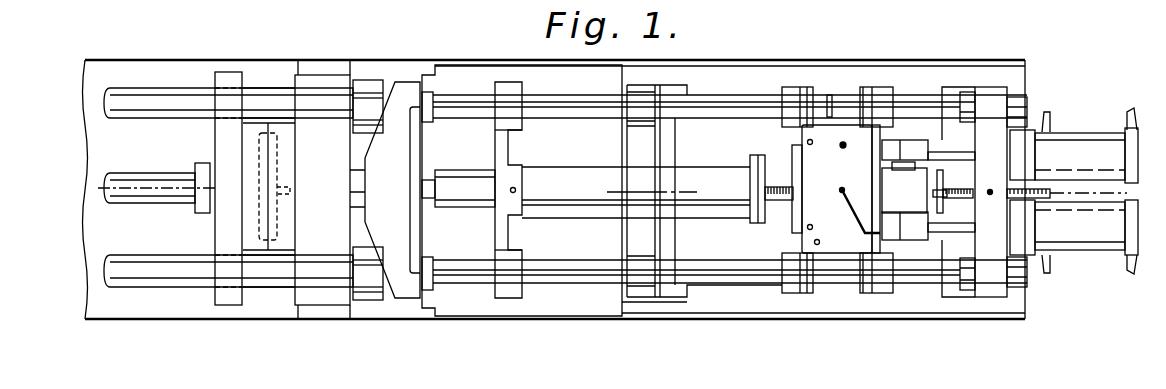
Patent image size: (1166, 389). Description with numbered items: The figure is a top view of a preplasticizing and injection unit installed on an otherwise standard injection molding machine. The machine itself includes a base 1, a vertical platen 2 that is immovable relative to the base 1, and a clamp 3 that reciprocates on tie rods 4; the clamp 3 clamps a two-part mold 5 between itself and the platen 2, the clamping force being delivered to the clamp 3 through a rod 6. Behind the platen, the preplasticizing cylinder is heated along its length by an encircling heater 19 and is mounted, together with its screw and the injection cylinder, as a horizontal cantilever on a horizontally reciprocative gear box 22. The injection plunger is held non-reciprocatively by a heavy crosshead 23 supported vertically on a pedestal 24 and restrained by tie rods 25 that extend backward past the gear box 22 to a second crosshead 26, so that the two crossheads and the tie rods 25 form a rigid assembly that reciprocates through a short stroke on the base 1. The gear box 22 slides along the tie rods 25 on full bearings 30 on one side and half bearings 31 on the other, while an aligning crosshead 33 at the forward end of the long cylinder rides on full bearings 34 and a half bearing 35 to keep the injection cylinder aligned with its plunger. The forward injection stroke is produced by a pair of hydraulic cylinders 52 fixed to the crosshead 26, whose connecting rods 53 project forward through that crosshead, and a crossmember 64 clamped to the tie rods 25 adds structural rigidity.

The base 1 is at (397, 312).
The vertical platen 2 is at (325, 155).
The clamp 3 is at (234, 161).
The tie rods 4 is at (150, 112).
The two-part mold 5 is at (258, 190).
The rod 6 is at (143, 198).
The encircling heater 19 is at (601, 194).
The gear box 22 is at (848, 175).
The crosshead 23 is at (398, 185).
The pedestal 24 is at (468, 232).
The tie rods 25 is at (550, 107).
The second crosshead 26 is at (474, 199).
The full bearings 30 is at (878, 287).
The half bearings 31 is at (885, 90).
The aligning crosshead 33 is at (500, 152).
The full bearings 34 is at (512, 290).
The half bearing 35 is at (517, 82).
The hydraulic cylinders 52 is at (1091, 162).
The connecting rods 53 is at (940, 153).
The crossmember 64 is at (657, 247).